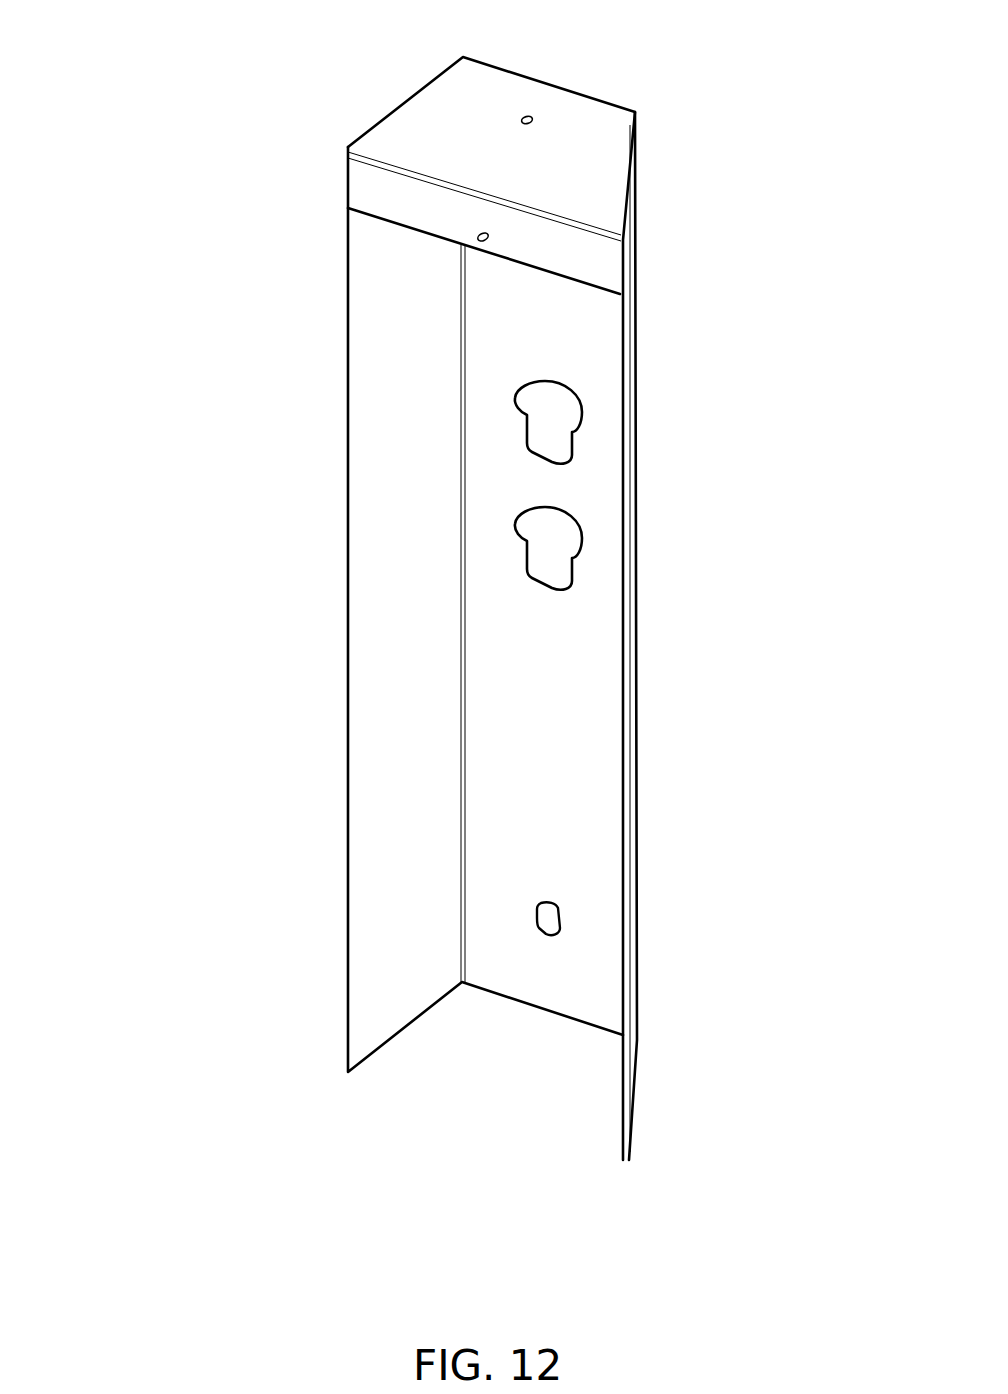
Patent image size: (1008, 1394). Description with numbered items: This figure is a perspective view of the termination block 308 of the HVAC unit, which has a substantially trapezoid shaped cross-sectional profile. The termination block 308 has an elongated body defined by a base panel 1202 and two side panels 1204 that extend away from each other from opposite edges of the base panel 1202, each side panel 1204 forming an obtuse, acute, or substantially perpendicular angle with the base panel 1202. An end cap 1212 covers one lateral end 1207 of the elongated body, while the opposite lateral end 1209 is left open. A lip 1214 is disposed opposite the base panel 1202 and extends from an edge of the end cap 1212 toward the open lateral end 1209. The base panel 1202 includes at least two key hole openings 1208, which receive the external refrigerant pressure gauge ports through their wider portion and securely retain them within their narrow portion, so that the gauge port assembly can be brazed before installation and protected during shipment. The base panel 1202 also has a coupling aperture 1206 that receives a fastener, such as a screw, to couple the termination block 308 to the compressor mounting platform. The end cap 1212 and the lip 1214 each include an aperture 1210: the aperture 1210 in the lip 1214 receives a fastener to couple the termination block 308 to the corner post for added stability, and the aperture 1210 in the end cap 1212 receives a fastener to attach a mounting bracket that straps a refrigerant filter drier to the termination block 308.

The lateral end 1207 is at (258, 88).
The apertures 1210 is at (489, 239).
The end cap 1212 is at (600, 127).
The termination block 308 is at (752, 250).
The lip 1214 is at (592, 255).
The key hole openings 1208 is at (555, 545).
The coupling aperture 1206 is at (557, 925).
The side panels 1204 is at (380, 1015).
The base panel 1202 is at (550, 985).
The opposite lateral end 1209 is at (603, 1207).